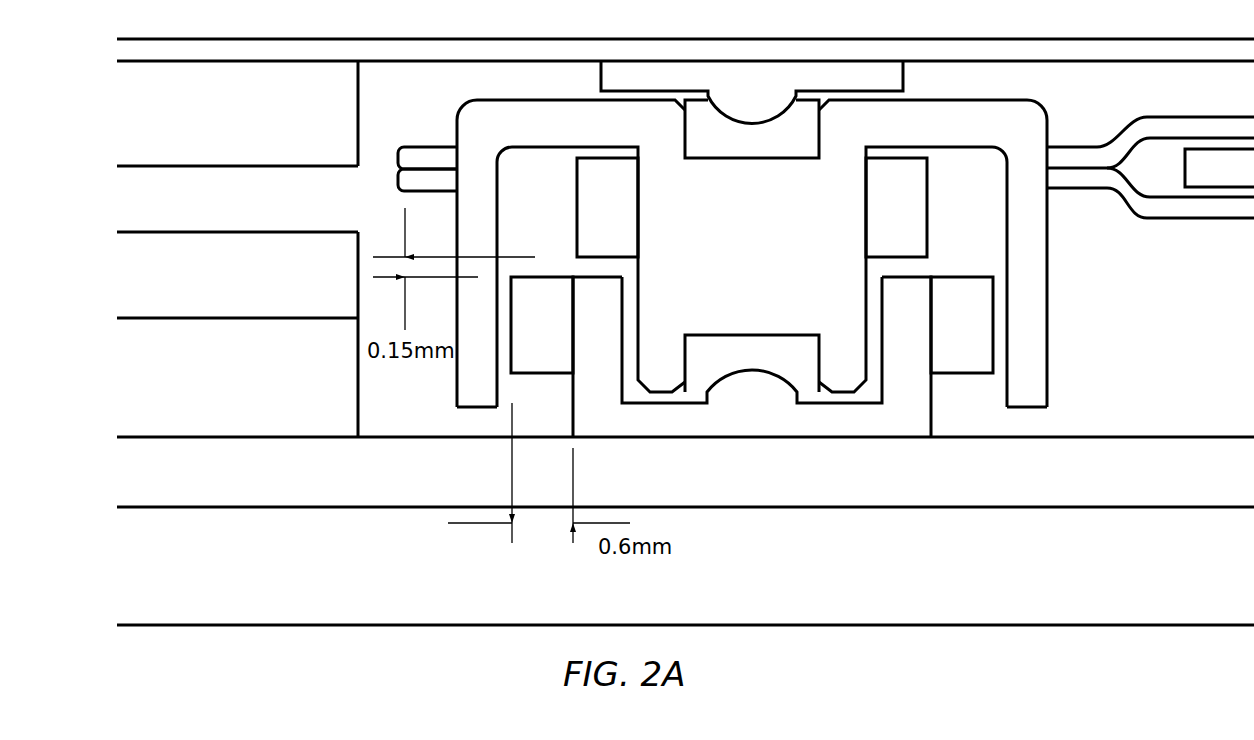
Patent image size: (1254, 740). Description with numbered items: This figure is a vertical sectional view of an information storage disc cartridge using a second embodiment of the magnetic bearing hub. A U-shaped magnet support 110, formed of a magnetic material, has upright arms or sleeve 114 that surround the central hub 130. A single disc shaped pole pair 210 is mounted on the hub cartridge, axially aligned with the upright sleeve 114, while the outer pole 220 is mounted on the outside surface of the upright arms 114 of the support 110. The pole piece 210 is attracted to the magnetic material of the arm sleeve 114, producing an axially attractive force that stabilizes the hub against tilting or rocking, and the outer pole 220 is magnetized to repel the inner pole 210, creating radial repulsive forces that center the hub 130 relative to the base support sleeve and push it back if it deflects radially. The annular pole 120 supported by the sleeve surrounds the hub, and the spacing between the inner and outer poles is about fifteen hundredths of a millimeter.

The magnet support 110 is at (832, 419).
The upright sleeve 114 is at (602, 408).
The pole 120 is at (438, 440).
The hub 130 is at (842, 319).
The disc shaped pole pair 210 is at (912, 208).
The outer pole 220 is at (975, 328).